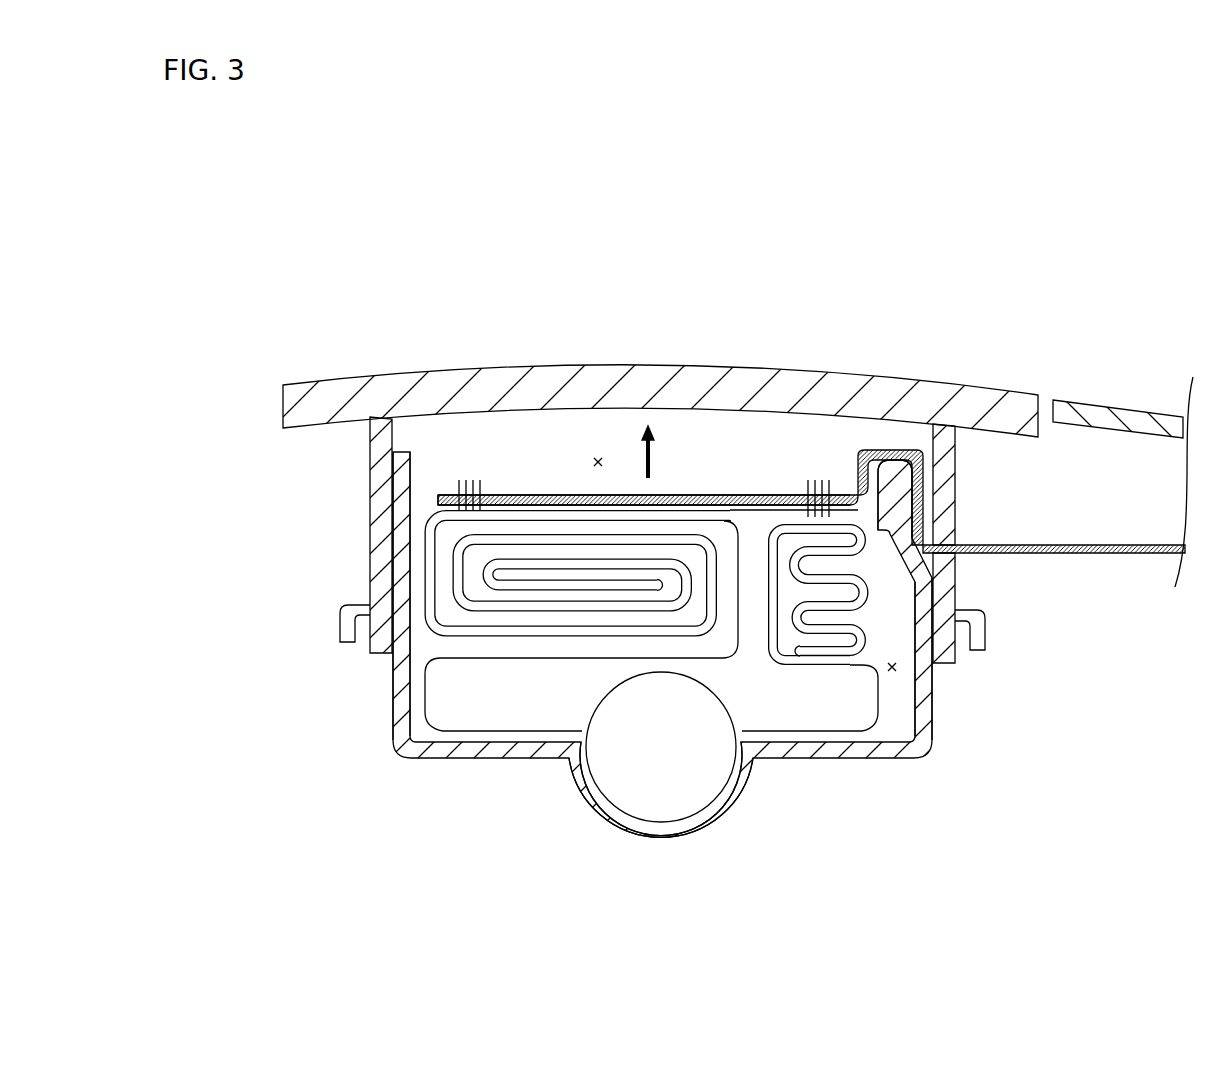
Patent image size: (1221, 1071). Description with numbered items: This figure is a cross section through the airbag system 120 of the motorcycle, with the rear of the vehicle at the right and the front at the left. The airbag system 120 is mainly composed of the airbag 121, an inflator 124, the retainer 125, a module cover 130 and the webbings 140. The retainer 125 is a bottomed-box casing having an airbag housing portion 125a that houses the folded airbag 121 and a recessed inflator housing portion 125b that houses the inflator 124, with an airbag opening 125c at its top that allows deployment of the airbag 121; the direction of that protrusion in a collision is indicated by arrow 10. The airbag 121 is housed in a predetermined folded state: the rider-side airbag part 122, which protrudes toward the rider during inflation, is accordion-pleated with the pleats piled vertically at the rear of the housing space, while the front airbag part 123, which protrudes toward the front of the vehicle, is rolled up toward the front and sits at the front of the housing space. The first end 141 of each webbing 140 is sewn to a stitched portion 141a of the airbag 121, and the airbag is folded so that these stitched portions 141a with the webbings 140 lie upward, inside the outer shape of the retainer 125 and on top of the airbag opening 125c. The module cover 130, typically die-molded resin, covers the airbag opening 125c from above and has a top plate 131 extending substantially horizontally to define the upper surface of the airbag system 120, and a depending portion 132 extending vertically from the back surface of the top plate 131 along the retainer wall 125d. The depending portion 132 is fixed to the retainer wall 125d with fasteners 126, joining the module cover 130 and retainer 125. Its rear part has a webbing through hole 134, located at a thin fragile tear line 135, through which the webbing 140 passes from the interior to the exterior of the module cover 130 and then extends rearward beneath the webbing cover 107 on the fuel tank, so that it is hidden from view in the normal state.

The arrow 10 is at (666, 452).
The webbing cover 107 is at (1080, 408).
The airbag system 120 is at (887, 280).
The airbag 121 is at (792, 703).
The rider-side airbag part 122 is at (849, 672).
The front airbag part 123 is at (432, 638).
The inflator 124 is at (660, 782).
The retainer 125 is at (935, 763).
The airbag housing portion 125a is at (900, 667).
The inflator housing portion 125b is at (600, 792).
The airbag opening 125c is at (600, 456).
The retainer wall 125d is at (392, 674).
The fastener 126 is at (340, 626).
The module cover 130 is at (660, 355).
The top plate 131 is at (490, 382).
The depending portion 132 is at (375, 498).
The webbing through hole 134 is at (792, 497).
The tear line 135 is at (895, 499).
The webbing 140 is at (1105, 572).
The first end 141 is at (532, 492).
The stitched portion 141a is at (484, 476).